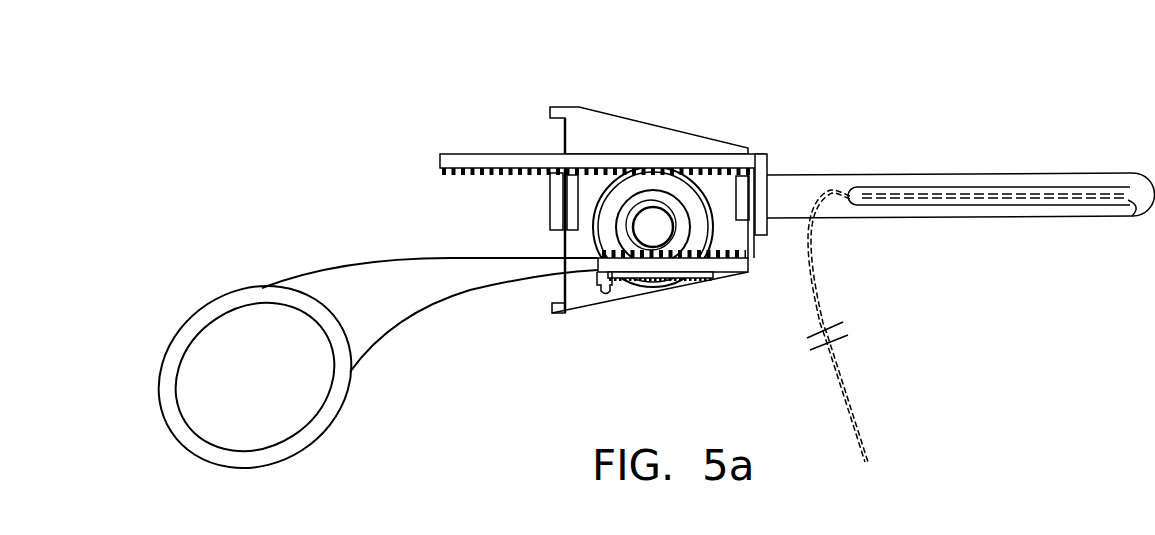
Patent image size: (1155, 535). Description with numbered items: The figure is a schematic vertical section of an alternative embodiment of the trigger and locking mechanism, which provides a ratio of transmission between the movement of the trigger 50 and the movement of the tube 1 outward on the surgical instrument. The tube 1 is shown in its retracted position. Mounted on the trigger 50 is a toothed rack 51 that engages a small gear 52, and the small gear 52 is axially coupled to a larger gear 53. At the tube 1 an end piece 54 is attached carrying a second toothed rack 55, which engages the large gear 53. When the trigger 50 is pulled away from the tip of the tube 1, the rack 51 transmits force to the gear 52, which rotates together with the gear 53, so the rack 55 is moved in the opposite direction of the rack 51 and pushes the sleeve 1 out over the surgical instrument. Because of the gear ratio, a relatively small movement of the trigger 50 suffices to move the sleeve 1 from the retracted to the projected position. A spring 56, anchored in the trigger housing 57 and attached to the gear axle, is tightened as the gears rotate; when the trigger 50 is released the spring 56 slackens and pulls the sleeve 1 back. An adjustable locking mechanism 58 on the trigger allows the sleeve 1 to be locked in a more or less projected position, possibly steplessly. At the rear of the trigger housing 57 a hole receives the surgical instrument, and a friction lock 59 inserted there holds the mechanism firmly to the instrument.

The tube 1 is at (1015, 166).
The trigger 50 is at (203, 302).
The toothed rack 51 is at (738, 276).
The small gear 52 is at (663, 256).
The large gear 53 is at (695, 165).
The end piece 54 is at (776, 149).
The toothed rack 55 is at (452, 150).
The spring 56 is at (705, 276).
The trigger housing 57 is at (586, 103).
The adjustable locking mechanism 58 is at (589, 300).
The friction lock 59 is at (543, 201).